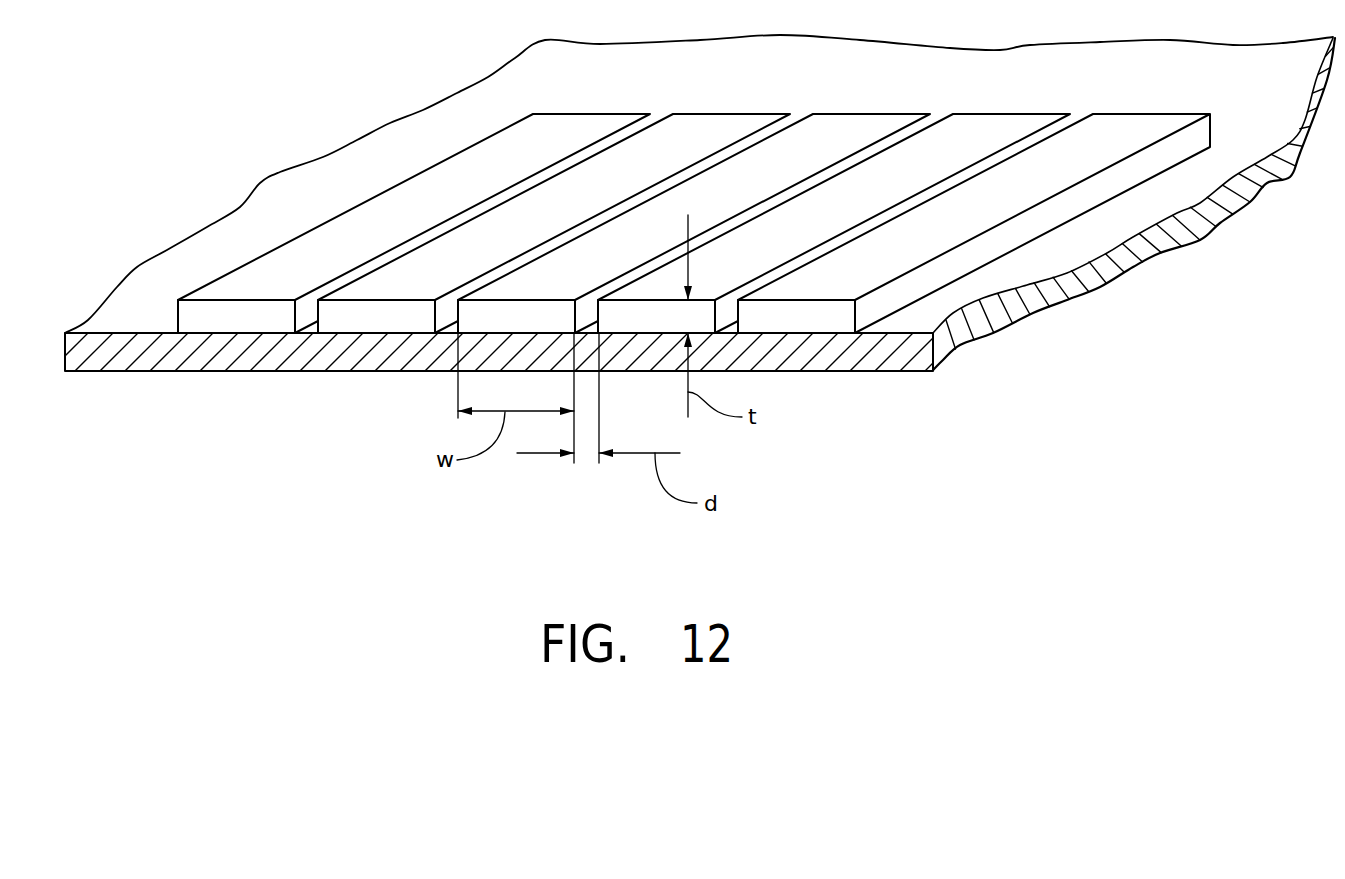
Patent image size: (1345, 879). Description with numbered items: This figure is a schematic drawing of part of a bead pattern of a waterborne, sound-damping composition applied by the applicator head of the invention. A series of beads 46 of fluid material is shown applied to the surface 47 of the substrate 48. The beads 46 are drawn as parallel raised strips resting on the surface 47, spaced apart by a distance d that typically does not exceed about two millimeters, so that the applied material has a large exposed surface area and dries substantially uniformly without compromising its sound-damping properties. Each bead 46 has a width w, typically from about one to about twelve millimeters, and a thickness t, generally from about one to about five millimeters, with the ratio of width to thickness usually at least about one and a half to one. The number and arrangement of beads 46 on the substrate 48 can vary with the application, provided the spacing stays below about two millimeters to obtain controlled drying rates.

The beads 46 is at (975, 130).
The surface 47 is at (250, 223).
The substrate 48 is at (252, 434).